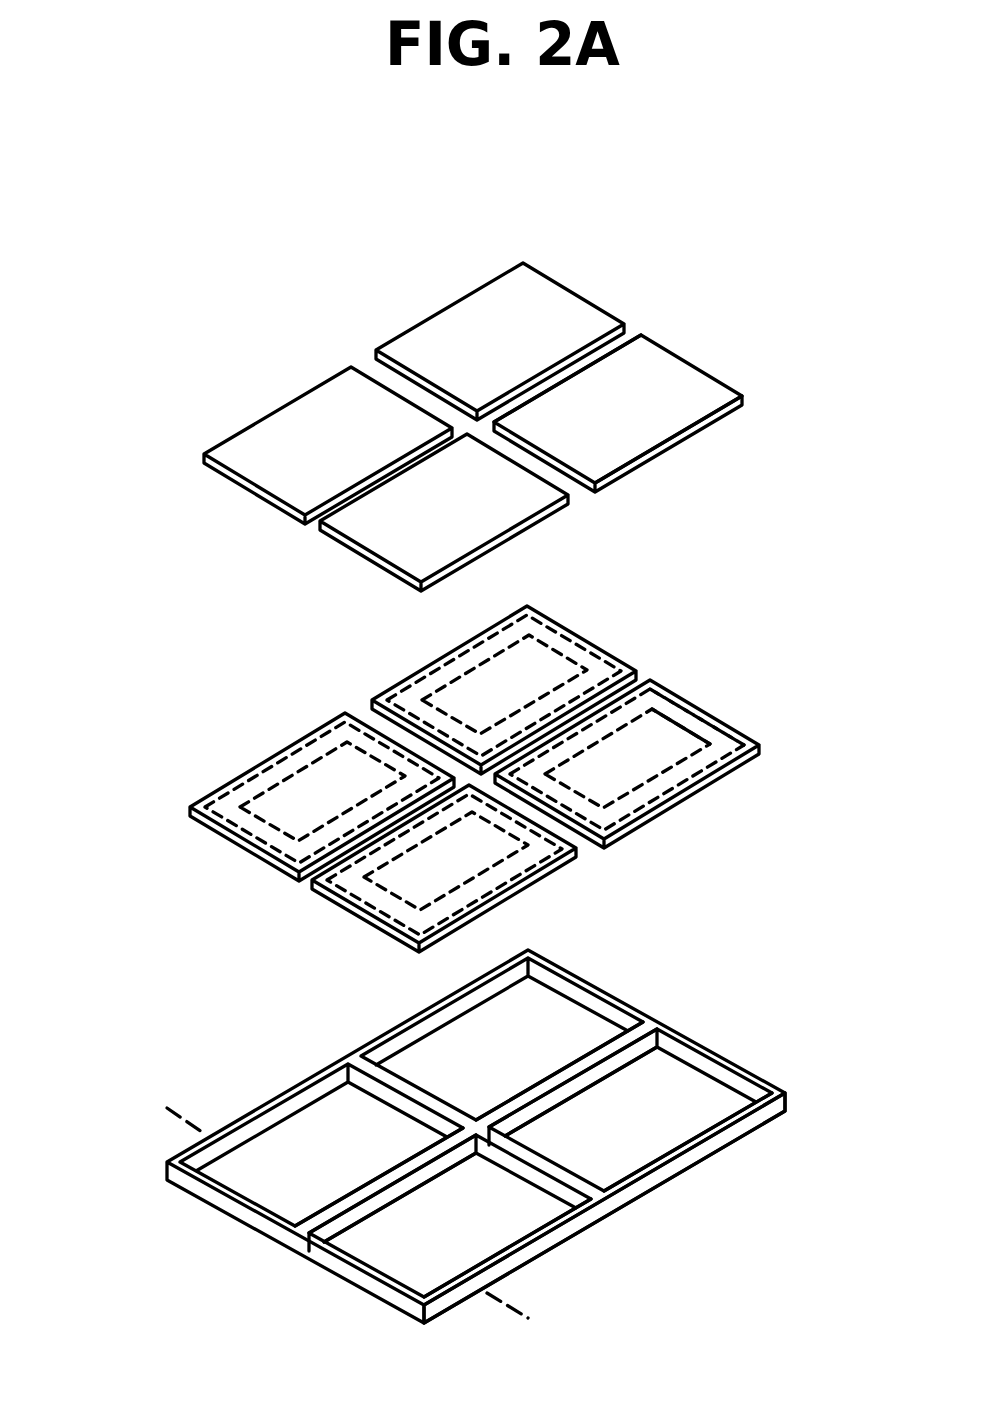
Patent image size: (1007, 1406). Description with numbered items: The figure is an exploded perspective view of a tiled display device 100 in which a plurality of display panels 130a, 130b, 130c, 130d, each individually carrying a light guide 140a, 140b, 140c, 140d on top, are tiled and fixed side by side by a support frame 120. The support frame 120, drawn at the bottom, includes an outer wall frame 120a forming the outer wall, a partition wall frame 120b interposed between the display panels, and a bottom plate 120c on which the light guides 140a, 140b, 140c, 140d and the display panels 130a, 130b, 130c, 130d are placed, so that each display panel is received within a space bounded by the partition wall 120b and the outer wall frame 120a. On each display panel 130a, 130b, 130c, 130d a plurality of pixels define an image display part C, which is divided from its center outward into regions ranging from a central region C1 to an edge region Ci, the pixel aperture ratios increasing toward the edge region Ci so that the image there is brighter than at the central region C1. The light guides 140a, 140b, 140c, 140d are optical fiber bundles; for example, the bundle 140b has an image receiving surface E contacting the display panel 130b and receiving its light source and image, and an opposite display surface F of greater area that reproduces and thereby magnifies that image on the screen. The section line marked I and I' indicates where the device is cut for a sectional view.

The tiled display device 100 is at (444, 783).
The support frame 120 is at (480, 1136).
The outer wall frame 120a is at (533, 1241).
The partition wall frame 120b is at (557, 1172).
The bottom plate 120c is at (675, 1139).
The display panel 130a is at (590, 636).
The display panel 130b is at (656, 757).
The display panel 130c is at (360, 920).
The display panel 130d is at (240, 848).
The light guide 140a is at (583, 292).
The light guide 140b is at (700, 360).
The light guide 140c is at (360, 574).
The light guide 140d is at (245, 507).
The image receiving surface E is at (716, 426).
The display surface F is at (641, 442).
The image display part C is at (799, 803).
The central region C1 is at (655, 765).
The edge region Ci is at (720, 760).
The section line I is at (175, 1108).
The section line I' is at (519, 1315).